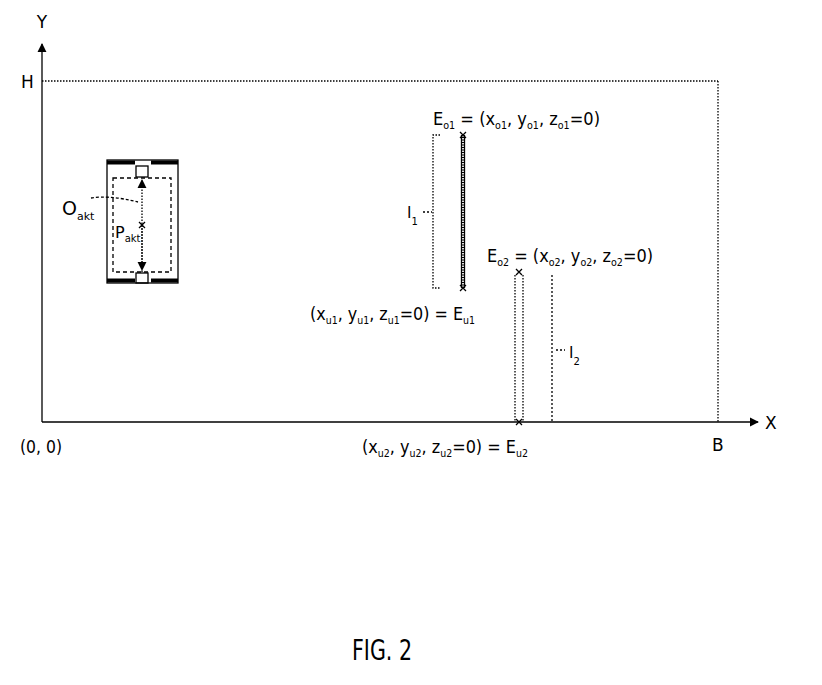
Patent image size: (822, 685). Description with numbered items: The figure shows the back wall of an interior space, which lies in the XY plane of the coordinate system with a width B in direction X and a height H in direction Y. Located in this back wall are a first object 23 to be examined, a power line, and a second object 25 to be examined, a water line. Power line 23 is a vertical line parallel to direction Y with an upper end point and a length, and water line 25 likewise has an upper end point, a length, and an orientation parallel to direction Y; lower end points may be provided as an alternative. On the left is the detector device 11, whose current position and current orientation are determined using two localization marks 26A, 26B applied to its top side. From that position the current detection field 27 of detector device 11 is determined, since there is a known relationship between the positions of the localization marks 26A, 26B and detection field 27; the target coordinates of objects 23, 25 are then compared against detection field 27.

The detector device 11 is at (201, 126).
The first object to be examined (power line) 23 is at (466, 183).
The second object to be examined (water line) 25 is at (514, 357).
The localization mark 26A is at (141, 165).
The localization mark 26B is at (141, 284).
The detection field 27 is at (183, 216).